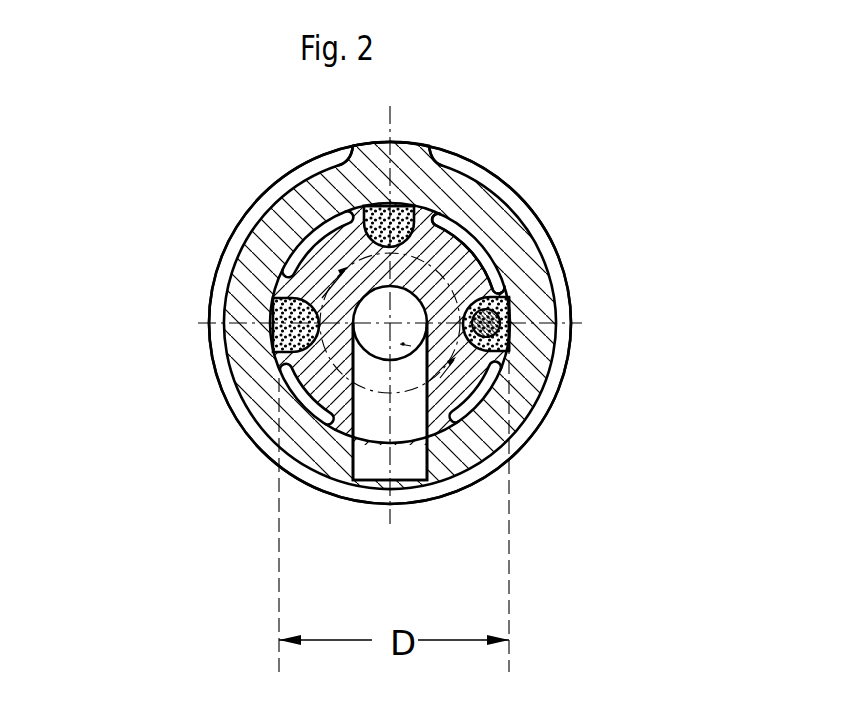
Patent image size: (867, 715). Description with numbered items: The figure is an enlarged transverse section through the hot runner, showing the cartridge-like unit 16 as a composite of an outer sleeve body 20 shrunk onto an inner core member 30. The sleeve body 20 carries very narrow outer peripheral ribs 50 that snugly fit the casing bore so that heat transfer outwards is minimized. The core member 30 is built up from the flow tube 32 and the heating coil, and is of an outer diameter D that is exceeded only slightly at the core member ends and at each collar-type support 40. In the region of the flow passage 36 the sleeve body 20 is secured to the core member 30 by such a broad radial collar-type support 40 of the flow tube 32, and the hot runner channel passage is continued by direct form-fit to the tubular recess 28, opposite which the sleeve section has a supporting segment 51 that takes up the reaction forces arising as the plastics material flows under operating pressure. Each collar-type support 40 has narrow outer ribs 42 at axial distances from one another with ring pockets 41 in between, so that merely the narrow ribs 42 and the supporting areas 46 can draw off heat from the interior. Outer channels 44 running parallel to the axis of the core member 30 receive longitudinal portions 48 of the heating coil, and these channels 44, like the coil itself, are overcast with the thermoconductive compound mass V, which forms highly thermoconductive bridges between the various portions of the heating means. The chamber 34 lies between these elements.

The sleeve body 20 is at (129, 79).
The cartridge-like unit 16 is at (309, 266).
The tubular recess 28 is at (410, 482).
The flow passage 36 is at (447, 458).
The core member 30 is at (252, 346).
The flow tube 32 is at (322, 422).
The working chamber 34 is at (478, 405).
The collar-type support 40 is at (324, 204).
The ring pocket 41 is at (303, 268).
The outer rib 42 is at (510, 328).
The outer channel 44 is at (420, 206).
The supporting area 46 is at (465, 240).
The longitudinal portion of the heating coil 48 is at (508, 338).
The outer peripheral rib 50 is at (233, 397).
The supporting segment 51 is at (377, 142).
The thermoconductive compound mass V is at (510, 302).